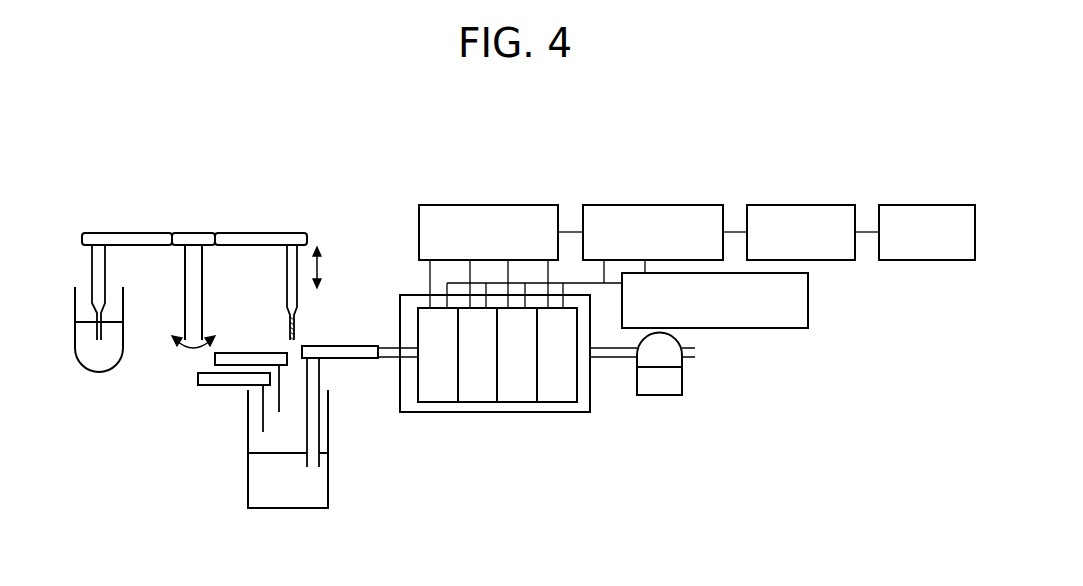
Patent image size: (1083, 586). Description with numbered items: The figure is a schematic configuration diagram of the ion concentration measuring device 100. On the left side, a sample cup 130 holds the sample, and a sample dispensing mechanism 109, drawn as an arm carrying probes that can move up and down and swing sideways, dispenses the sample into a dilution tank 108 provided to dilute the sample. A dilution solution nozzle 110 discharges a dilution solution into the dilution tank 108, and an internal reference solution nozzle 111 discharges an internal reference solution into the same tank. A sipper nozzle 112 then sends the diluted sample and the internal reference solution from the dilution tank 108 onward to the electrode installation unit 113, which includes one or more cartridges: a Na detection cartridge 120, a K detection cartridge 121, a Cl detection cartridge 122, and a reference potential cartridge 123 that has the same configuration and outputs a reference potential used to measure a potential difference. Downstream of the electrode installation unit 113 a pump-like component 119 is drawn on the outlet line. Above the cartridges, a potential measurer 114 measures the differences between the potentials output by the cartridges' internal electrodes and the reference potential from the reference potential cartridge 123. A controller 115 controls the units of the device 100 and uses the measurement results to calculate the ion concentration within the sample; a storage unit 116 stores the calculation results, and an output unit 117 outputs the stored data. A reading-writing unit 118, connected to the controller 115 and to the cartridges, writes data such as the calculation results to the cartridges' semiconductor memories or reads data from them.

The ion concentration measuring device 100 is at (248, 165).
The dilution tank 108 is at (288, 510).
The sample dispensing mechanism 109 is at (134, 233).
The dilution solution nozzle 110 is at (220, 387).
The internal reference solution nozzle 111 is at (252, 352).
The sipper nozzle 112 is at (321, 428).
The electrode installation unit 113 is at (402, 294).
The potential measurer 114 is at (497, 205).
The controller 115 is at (670, 205).
The storage unit 116 is at (802, 205).
The output unit 117 is at (926, 205).
The reading-writing unit 118 is at (809, 300).
The suction pump 119 is at (684, 378).
The Na detection cartridge 120 is at (441, 404).
The K detection cartridge 121 is at (480, 404).
The Cl detection cartridge 122 is at (520, 404).
The reference potential cartridge 123 is at (558, 404).
The sample cup 130 is at (98, 373).